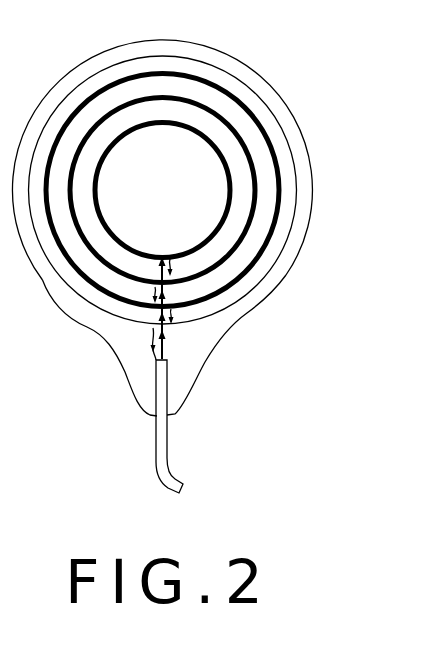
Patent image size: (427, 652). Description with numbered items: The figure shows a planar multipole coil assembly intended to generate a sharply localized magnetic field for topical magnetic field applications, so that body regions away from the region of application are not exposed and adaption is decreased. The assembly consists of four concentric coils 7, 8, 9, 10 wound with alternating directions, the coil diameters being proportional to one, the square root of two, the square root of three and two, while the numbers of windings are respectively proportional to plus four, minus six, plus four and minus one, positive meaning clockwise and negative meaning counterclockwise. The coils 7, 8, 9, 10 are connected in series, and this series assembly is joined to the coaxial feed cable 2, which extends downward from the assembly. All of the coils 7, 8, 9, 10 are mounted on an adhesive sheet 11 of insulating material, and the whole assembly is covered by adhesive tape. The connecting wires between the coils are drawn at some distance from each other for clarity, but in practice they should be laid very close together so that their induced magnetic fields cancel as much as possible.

The coaxial feed cable 2 is at (177, 473).
The coil 7 is at (167, 124).
The coil 8 is at (100, 127).
The coil 9 is at (257, 272).
The coil 10 is at (232, 310).
The adhesive sheet 11 is at (187, 367).